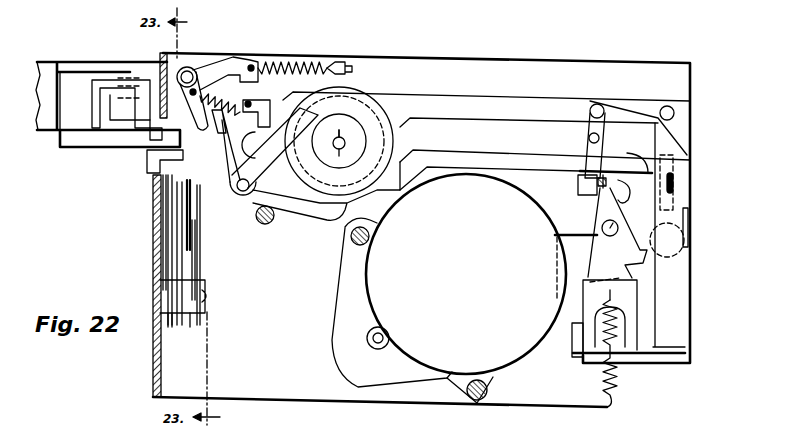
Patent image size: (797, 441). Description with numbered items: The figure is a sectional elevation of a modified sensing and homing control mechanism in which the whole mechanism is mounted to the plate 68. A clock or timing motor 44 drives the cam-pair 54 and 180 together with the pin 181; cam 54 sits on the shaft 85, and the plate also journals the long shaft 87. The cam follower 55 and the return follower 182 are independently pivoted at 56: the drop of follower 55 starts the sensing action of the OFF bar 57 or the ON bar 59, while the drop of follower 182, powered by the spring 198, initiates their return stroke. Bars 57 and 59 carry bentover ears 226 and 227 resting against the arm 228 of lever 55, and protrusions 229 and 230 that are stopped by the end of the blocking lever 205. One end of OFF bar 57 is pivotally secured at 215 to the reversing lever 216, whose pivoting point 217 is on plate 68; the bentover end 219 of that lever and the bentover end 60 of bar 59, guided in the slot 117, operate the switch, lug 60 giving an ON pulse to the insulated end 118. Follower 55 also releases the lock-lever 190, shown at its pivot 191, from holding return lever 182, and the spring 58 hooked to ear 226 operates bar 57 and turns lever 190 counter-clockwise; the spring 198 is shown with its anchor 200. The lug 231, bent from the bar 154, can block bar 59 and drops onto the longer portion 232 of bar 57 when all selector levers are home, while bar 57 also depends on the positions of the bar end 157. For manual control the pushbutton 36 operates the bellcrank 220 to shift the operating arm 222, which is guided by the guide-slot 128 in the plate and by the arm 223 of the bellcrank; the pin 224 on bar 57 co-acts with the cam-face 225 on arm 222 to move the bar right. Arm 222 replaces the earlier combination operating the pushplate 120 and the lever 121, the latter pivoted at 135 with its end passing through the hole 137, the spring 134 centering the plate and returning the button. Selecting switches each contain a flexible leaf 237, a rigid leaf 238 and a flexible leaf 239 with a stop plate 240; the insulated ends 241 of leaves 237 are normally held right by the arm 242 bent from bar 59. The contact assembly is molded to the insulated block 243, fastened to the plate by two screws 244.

The pushbutton 36 is at (680, 250).
The timing motor 44 is at (466, 274).
The cam assembly 54 is at (343, 129).
The cam follower 55 is at (326, 191).
The pivot 56 is at (242, 196).
The OFF bar 57 is at (486, 109).
The spring 58 is at (236, 62).
The ON bar 59 is at (545, 169).
The bentover end 60 is at (633, 194).
The bracket 68 is at (382, 310).
The shaft 85 is at (338, 147).
The shaft 87 is at (265, 224).
The slot 117 is at (634, 155).
The insulated end 118 is at (605, 170).
The pushplate 120 is at (610, 316).
The lever 121 is at (617, 233).
The guide-slot 128 is at (572, 340).
The spring 134 is at (618, 375).
The pivot-point 135 is at (601, 224).
The hole 137 is at (597, 195).
The bar 154 is at (108, 104).
The bar end 157 is at (150, 153).
The cam 180 is at (339, 130).
The pin 181 is at (356, 118).
The return follower 182 is at (229, 187).
The lock-lever 190 is at (204, 88).
The pivot pin 191 is at (188, 67).
The spring 198 is at (290, 62).
The spring anchor 200 is at (342, 64).
The blocking lever 205 is at (150, 136).
The pivot 215 is at (594, 105).
The reversing lever 216 is at (603, 118).
The pivoting point 217 is at (589, 138).
The bentover end 219 is at (578, 182).
The bellcrank 220 is at (684, 217).
The operating arm 222 is at (669, 235).
The arm 223 is at (676, 178).
The pin 224 is at (676, 112).
The cam-face 225 is at (680, 140).
The bentover ear 226 is at (270, 110).
The bentover ear 227 is at (280, 140).
The arm 228 is at (252, 149).
The protrusion 229 is at (163, 60).
The protrusion 230 is at (216, 145).
The lug 231 is at (130, 88).
The longer portion 232 is at (135, 122).
The flexible leaf 237 is at (186, 206).
The rigid leaf 238 is at (165, 236).
The flexible leaf 239 is at (198, 222).
The stop plate 240 is at (197, 250).
The insulated end 241 is at (167, 180).
The arm 242 is at (177, 188).
The insulated block 243 is at (179, 328).
The screws 244 is at (207, 296).